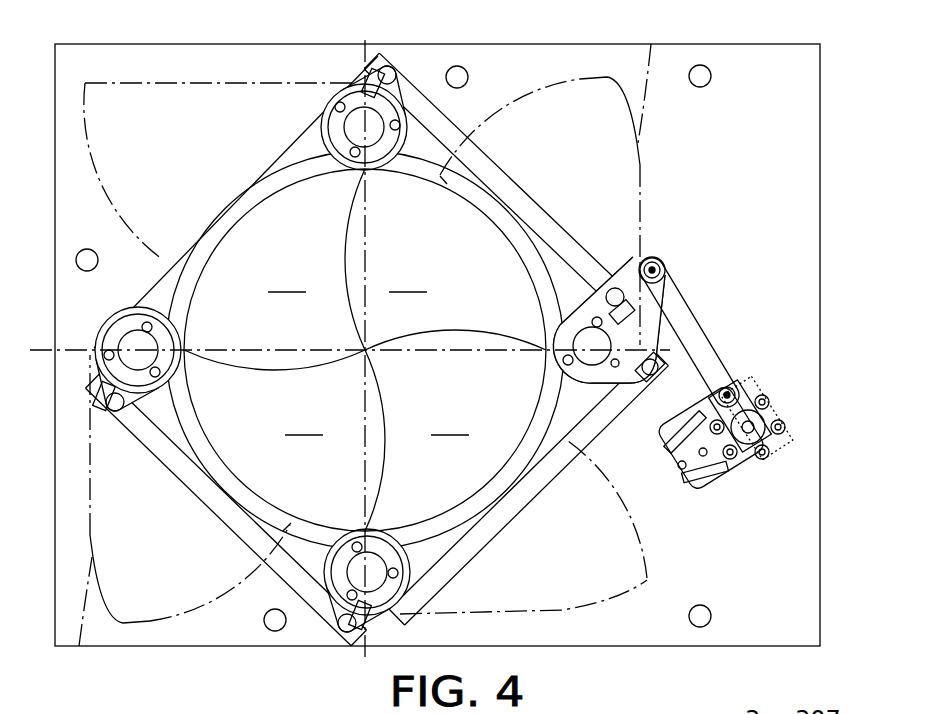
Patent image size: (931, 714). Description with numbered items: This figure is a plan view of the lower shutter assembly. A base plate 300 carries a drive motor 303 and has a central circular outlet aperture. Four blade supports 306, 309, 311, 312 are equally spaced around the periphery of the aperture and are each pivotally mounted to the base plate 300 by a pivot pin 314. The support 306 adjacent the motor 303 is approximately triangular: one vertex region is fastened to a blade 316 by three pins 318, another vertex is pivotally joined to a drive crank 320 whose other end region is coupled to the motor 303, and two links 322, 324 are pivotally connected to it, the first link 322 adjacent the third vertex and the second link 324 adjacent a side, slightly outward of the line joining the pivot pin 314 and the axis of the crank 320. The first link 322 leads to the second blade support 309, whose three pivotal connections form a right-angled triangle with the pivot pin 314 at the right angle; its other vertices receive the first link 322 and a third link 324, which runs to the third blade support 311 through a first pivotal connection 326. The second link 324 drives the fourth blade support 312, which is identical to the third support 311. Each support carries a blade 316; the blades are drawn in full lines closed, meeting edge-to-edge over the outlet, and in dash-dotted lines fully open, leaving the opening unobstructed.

The base plate 300 is at (802, 603).
The drive motor 303 is at (740, 478).
The blade support 306 is at (552, 300).
The second blade support 309 is at (385, 537).
The third blade support 311 is at (185, 397).
The fourth blade support 312 is at (340, 100).
The pivot pin 314 is at (130, 333).
The blade 316 is at (651, 44).
The pin 318 is at (556, 342).
The drive crank 320 is at (700, 322).
The first link 322 is at (603, 417).
The second link 324 is at (503, 163).
The first pivotal connection 326 is at (117, 440).